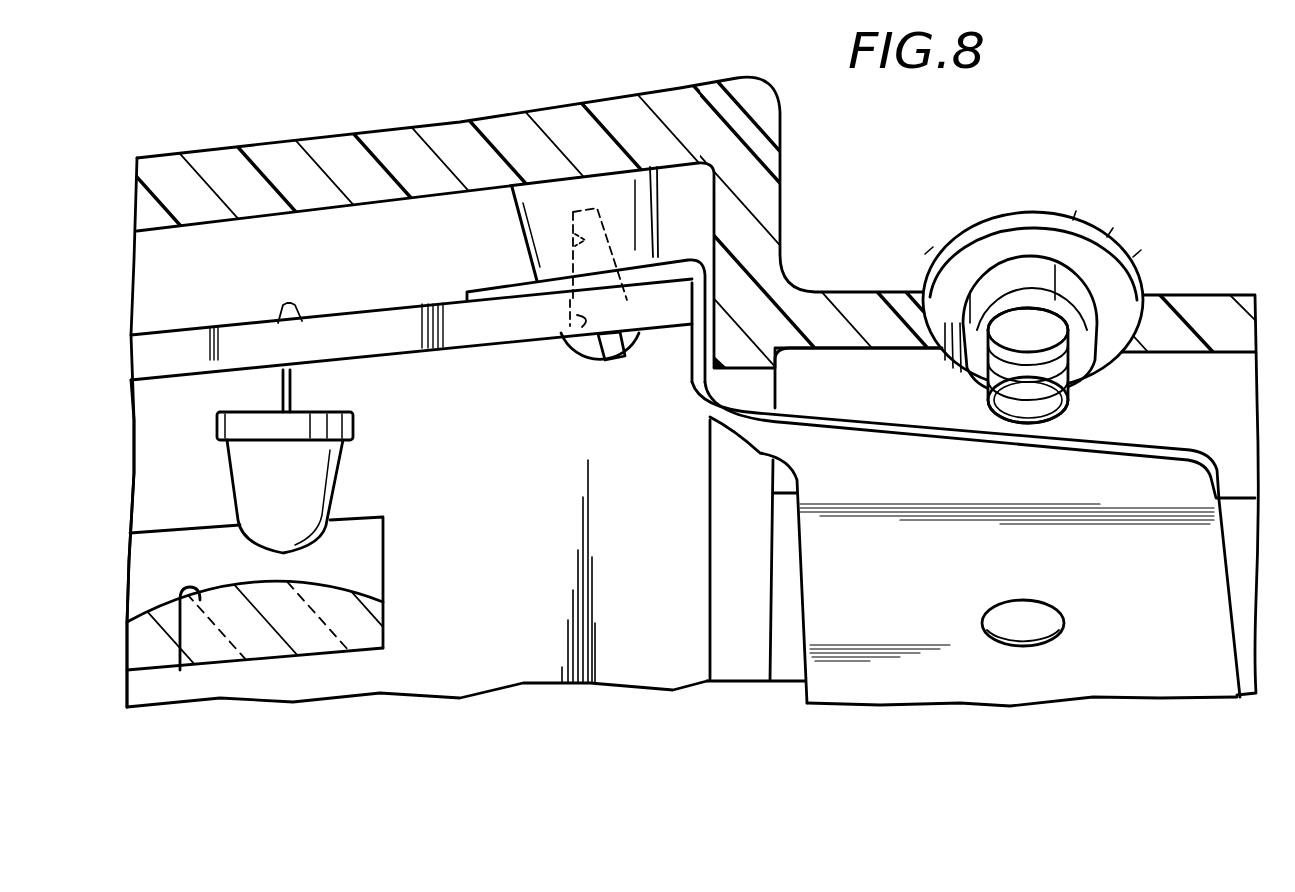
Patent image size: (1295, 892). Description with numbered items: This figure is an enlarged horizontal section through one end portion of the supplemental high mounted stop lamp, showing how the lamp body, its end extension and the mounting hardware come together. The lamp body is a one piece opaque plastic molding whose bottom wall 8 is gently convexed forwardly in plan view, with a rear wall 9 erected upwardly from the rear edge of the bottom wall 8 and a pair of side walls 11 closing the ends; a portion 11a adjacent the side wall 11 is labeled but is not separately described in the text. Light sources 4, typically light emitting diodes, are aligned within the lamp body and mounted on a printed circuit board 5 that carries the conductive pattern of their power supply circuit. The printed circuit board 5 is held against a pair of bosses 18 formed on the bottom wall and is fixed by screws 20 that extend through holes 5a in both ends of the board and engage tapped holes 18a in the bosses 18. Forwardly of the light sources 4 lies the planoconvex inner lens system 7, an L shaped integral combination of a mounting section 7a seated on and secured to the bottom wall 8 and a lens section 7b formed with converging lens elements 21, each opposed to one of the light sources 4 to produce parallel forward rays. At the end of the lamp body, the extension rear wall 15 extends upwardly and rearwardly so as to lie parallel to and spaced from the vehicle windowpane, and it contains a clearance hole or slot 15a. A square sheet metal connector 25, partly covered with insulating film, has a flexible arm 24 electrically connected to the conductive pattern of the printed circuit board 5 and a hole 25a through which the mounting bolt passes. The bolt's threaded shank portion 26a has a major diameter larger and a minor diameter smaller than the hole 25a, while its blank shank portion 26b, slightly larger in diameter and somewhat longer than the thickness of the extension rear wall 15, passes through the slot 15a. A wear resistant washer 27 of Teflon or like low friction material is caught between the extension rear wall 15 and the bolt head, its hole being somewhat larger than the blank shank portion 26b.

The light sources 4 is at (337, 484).
The printed circuit board 5 is at (372, 306).
The holes in printed circuit board 5a is at (575, 319).
The inner lens system 7 is at (287, 661).
The mounting section 7a is at (372, 562).
The lens section 7b is at (375, 637).
The bottom wall 8 is at (523, 656).
The rear wall 9 is at (445, 125).
The side walls 11 is at (717, 637).
The wall flange 11a is at (763, 394).
The extension rear wall 15 is at (1240, 296).
The clearance hole or slot 15a is at (1115, 326).
The bosses 18 is at (658, 213).
The tapped holes 18a is at (580, 239).
The screws 20 is at (560, 346).
The converging lens elements 21 is at (180, 670).
The flexible arm 24 is at (737, 425).
The sheet metal connector 25 is at (878, 684).
The hole in sheet metal connector 25a is at (1020, 639).
The threaded shank portion 26a is at (1024, 322).
The blank shank portion 26b is at (1085, 283).
The washer 27 is at (938, 257).